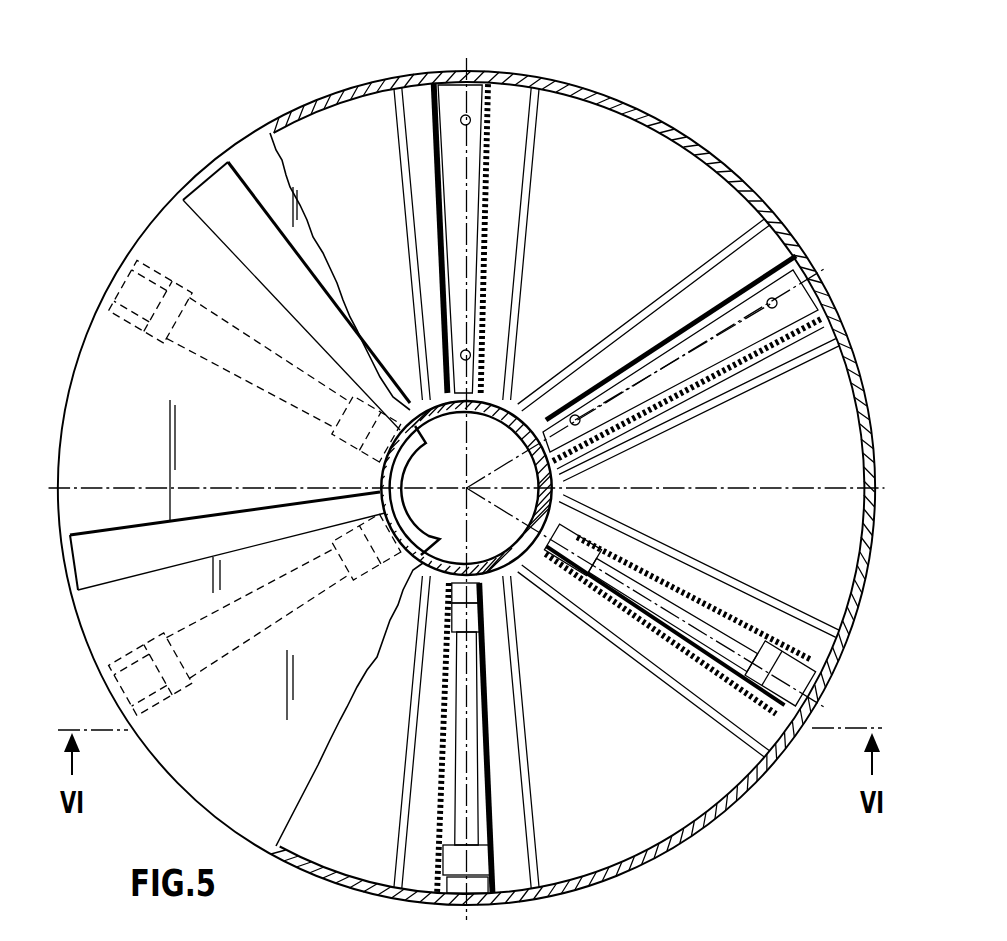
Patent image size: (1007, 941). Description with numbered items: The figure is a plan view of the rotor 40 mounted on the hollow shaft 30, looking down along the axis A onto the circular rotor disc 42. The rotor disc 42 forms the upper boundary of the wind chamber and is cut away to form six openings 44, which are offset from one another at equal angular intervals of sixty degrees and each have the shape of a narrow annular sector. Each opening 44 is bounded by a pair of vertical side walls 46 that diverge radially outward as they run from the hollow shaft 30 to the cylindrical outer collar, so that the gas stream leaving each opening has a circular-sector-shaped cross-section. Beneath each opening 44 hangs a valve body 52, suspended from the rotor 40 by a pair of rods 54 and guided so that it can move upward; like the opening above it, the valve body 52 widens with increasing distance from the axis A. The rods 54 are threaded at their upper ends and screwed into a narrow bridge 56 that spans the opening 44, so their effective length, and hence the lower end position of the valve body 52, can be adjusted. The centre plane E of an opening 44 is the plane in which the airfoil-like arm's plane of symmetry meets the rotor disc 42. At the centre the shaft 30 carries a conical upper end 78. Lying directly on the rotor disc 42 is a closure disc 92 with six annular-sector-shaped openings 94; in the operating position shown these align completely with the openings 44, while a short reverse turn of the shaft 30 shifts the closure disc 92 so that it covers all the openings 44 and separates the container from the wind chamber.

The shaft 30 is at (507, 408).
The rotor 40 is at (296, 99).
The rotor disc 42 is at (363, 118).
The openings 44 is at (447, 80).
The side walls 46 is at (440, 215).
The valve body 52 is at (670, 353).
The rods 54 is at (772, 303).
The bridge 56 is at (569, 575).
The conical upper end 78 is at (393, 472).
The closure disc 92 is at (271, 172).
The openings 94 is at (222, 188).
The axis A is at (472, 487).
The centre plane E is at (660, 650).